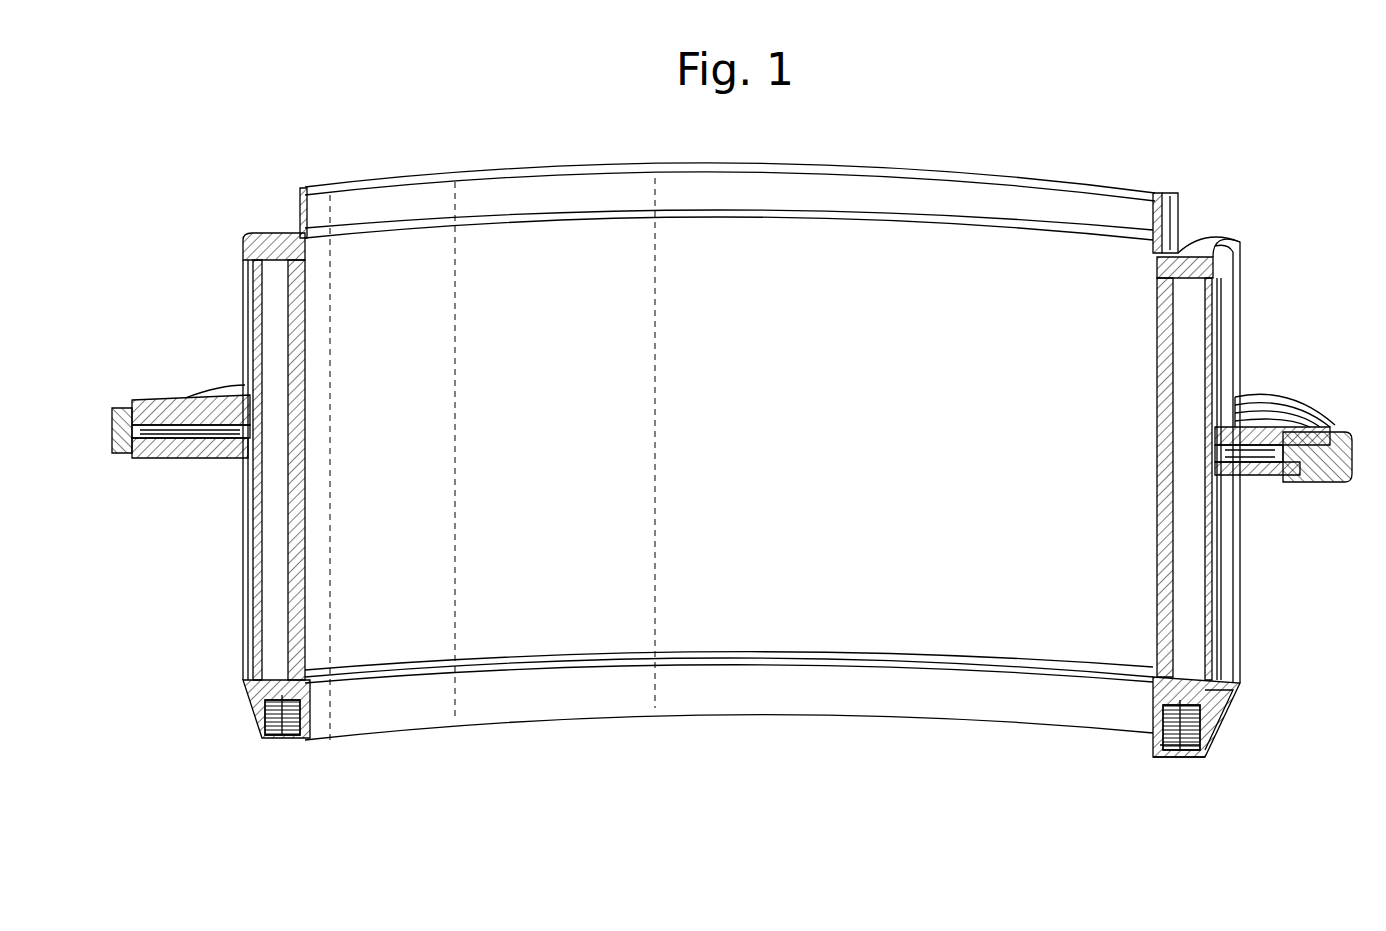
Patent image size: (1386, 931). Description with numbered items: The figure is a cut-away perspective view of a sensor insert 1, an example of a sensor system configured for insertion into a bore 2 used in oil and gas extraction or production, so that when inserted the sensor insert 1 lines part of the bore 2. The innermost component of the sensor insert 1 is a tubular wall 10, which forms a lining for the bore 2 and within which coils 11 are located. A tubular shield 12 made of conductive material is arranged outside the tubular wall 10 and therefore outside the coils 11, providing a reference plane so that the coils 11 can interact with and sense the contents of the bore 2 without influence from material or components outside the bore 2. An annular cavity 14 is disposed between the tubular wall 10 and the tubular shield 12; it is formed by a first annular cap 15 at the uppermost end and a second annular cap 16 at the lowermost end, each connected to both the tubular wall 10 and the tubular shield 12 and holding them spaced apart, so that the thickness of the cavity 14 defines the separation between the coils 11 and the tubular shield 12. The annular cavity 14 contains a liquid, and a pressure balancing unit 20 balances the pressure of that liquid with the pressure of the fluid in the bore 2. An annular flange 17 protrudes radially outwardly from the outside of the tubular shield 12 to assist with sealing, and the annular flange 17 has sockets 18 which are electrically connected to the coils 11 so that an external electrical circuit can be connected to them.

The sensor insert 1 is at (200, 187).
The bore 2 is at (803, 266).
The tubular wall 10 is at (1172, 318).
The coils 11 is at (1163, 352).
The tubular shield 12 is at (1222, 645).
The annular cavity 14 is at (1195, 602).
The first annular cap 15 is at (1193, 253).
The second annular cap 16 is at (1207, 692).
The annular flange 17 is at (1290, 405).
The sockets 18 is at (1318, 470).
The pressure balancing unit 20 is at (1170, 768).